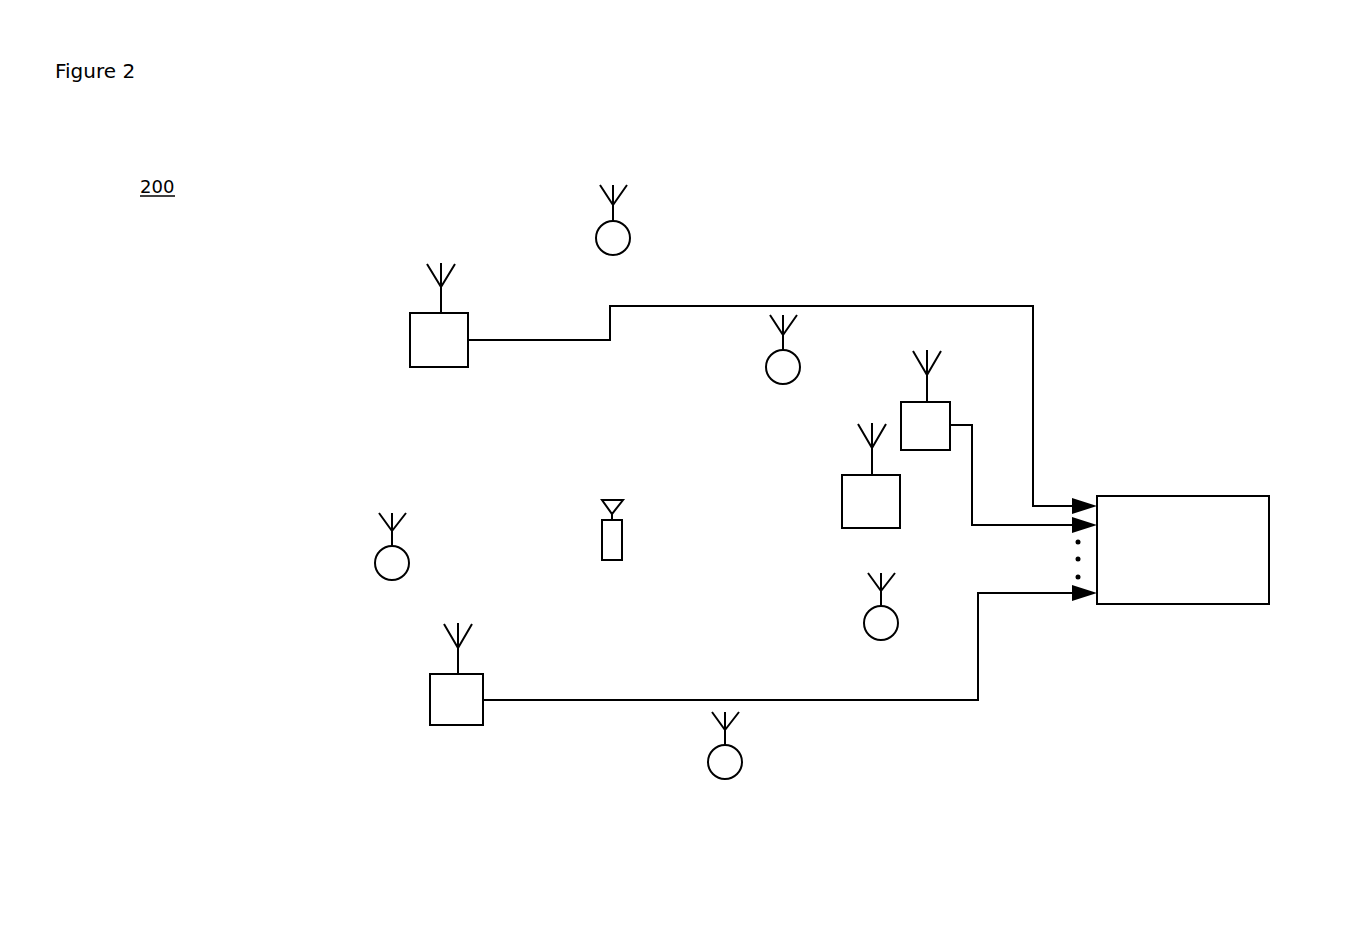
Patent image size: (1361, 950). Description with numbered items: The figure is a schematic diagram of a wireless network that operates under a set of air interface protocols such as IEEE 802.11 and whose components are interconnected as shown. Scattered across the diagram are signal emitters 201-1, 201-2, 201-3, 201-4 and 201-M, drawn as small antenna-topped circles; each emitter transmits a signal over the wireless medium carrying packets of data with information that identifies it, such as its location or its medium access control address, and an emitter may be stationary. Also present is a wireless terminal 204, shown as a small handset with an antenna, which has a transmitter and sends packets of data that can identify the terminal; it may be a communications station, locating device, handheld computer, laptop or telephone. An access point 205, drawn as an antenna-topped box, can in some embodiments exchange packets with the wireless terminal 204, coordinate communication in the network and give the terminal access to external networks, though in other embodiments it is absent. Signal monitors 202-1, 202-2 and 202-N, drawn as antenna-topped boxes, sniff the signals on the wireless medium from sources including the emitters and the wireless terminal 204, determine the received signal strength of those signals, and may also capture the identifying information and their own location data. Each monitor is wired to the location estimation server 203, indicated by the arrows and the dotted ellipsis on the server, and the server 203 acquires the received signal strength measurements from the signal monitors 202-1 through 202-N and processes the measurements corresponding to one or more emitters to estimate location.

The signal emitter 201-1 is at (598, 227).
The signal emitter 201-2 is at (768, 360).
The signal emitter 201-3 is at (868, 610).
The signal emitter 201-4 is at (710, 753).
The signal emitter 201-M is at (378, 553).
The signal monitor 202-1 is at (418, 310).
The signal monitor 202-2 is at (912, 400).
The signal monitor 202-N is at (440, 675).
The location estimation server 203 is at (1235, 495).
The wireless terminal 204 is at (623, 537).
The access point 205 is at (853, 472).